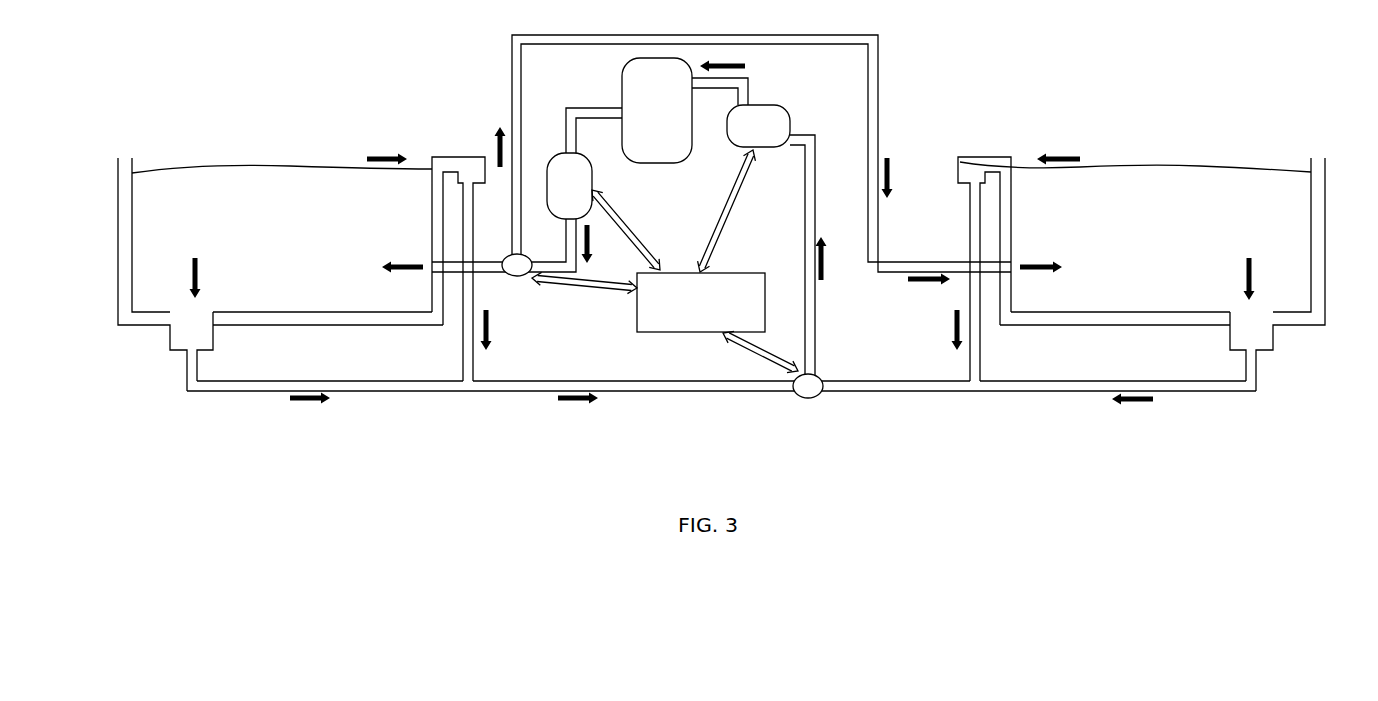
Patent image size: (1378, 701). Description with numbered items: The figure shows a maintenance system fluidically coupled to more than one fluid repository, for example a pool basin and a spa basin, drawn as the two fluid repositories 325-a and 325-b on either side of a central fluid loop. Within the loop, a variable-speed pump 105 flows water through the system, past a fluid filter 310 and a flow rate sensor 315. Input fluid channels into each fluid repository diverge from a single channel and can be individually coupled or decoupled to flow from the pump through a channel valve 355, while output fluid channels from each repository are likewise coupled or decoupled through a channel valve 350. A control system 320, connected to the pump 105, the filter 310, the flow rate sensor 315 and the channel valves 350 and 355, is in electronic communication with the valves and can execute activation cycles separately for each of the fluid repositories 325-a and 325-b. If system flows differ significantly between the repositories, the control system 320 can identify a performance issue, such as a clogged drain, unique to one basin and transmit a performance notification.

The variable-speed pump 105 is at (788, 105).
The fluid filter 310 is at (642, 163).
The flow rate sensor 315 is at (565, 149).
The control system 320 is at (637, 315).
The channel valve 350 is at (815, 398).
The channel valve 355 is at (513, 276).
The fluid repository 325-a is at (148, 328).
The fluid repository 325-b is at (1288, 328).